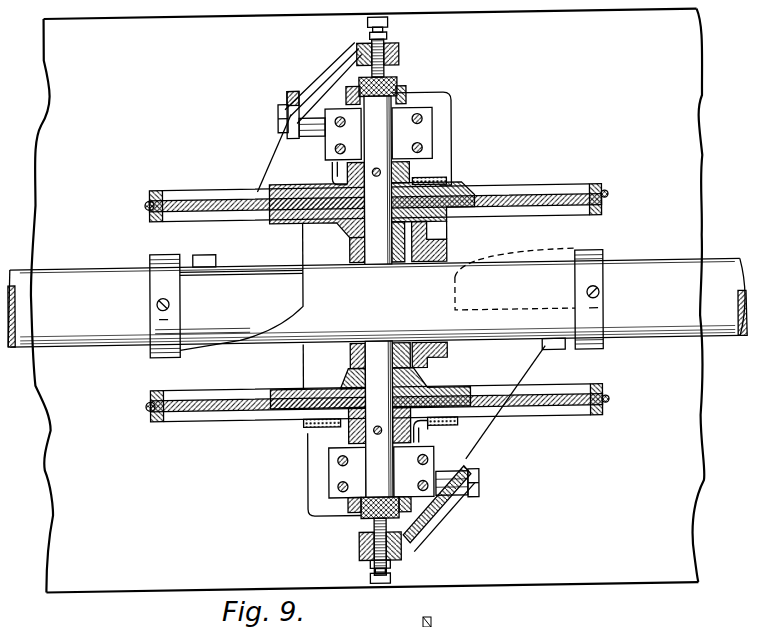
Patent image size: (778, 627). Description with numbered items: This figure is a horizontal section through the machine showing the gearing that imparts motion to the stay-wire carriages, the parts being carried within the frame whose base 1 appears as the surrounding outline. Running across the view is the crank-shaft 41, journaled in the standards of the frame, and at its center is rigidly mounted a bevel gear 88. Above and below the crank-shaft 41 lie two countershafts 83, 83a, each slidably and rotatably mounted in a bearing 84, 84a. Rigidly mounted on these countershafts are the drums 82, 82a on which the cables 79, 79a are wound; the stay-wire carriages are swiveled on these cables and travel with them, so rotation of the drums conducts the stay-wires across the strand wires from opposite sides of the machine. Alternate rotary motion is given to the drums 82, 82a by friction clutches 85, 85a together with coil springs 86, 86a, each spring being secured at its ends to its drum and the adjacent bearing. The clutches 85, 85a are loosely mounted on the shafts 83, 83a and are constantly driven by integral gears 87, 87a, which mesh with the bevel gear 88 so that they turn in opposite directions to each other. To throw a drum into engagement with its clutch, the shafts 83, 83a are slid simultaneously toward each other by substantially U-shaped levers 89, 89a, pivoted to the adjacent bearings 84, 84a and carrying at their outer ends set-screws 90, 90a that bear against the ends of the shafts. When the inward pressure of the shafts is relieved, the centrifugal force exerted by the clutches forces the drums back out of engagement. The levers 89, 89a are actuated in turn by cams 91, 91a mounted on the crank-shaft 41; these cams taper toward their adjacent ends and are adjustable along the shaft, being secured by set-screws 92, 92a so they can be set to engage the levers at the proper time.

The base 1 is at (82, 56).
The crank-shaft 41 is at (73, 314).
The cable 79 is at (146, 207).
The cable 79a is at (146, 407).
The drum 82 is at (181, 180).
The drum 82a is at (211, 421).
The countershaft 83 is at (376, 154).
The countershaft 83a is at (392, 463).
The bearing 84 is at (425, 115).
The bearing 84a is at (422, 315).
The friction clutch 85 is at (457, 190).
The friction clutch 85a is at (325, 421).
The coil spring 86 is at (441, 178).
The coil spring 86a is at (320, 425).
The integral gear 87 is at (343, 222).
The integral gear 87a is at (343, 371).
The bevel gear 88 is at (449, 247).
The U-shaped lever 89 is at (298, 148).
The U-shaped lever 89a is at (462, 457).
The set-screw 90 is at (367, 23).
The set-screw 90a is at (372, 580).
The cam 91 is at (232, 316).
The cam 91a is at (588, 254).
The set-screw 92 is at (155, 307).
The set-screw 92a is at (602, 297).